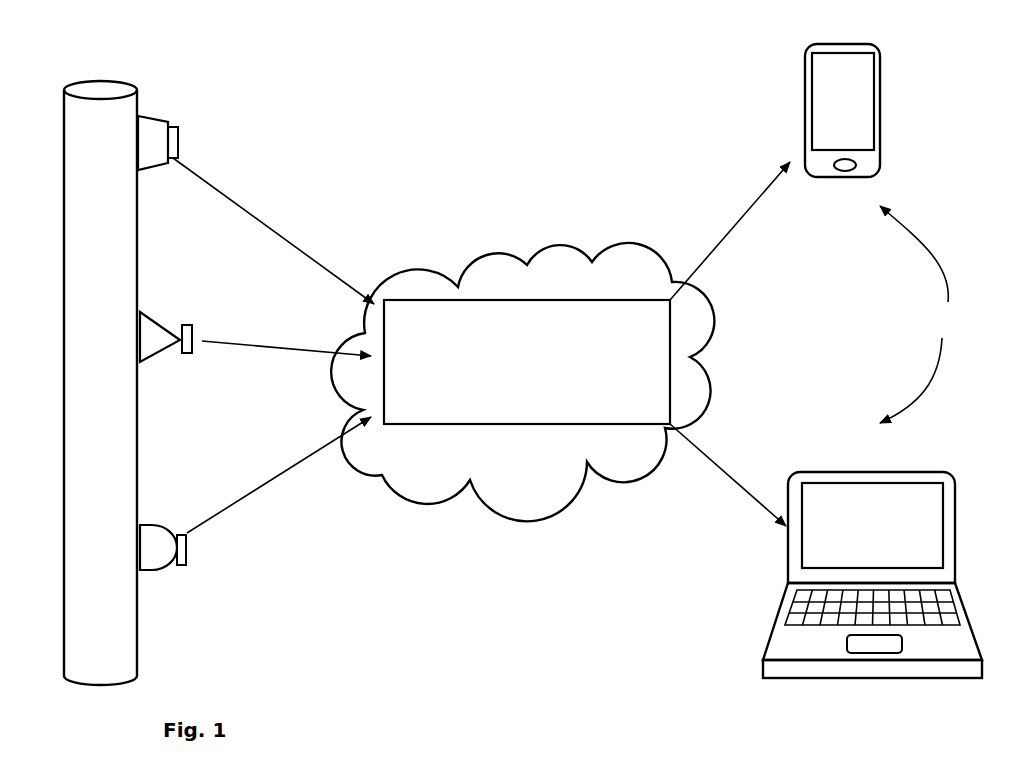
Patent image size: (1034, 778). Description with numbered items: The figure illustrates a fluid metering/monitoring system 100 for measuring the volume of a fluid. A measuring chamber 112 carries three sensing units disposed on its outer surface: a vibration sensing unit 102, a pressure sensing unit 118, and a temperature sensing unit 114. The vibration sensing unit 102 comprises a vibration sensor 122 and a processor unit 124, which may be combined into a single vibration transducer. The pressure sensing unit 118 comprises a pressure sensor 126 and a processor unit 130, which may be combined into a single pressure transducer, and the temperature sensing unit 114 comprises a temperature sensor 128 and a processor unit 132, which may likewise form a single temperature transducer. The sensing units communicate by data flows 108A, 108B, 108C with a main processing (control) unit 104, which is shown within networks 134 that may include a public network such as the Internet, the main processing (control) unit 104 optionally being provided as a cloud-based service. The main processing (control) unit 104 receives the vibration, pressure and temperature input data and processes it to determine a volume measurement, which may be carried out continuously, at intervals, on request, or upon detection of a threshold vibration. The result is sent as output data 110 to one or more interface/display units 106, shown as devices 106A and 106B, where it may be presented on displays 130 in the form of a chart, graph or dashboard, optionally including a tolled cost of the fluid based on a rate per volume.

The system 100 is at (553, 105).
The vibration sensing unit 102 is at (201, 555).
The main processing (control) unit 104 is at (527, 362).
The interface/display units 106 is at (919, 314).
The interface/display unit device 106A is at (823, 180).
The interface/display unit device 106B is at (815, 470).
The data flow 108A is at (279, 475).
The data flow 108B is at (286, 336).
The data flow 108C is at (273, 231).
The output data 110 is at (730, 344).
The measuring chamber 112 is at (117, 90).
The temperature sensing unit 114 is at (202, 152).
The pressure sensing unit 118 is at (166, 342).
The vibration sensor 122 is at (157, 535).
The processor unit 124 is at (180, 552).
The pressure sensor 126 is at (153, 345).
The temperature sensor 128 is at (153, 158).
The processor unit / display 130 is at (188, 353).
The processor unit 132 is at (172, 148).
The networks 134 is at (522, 382).